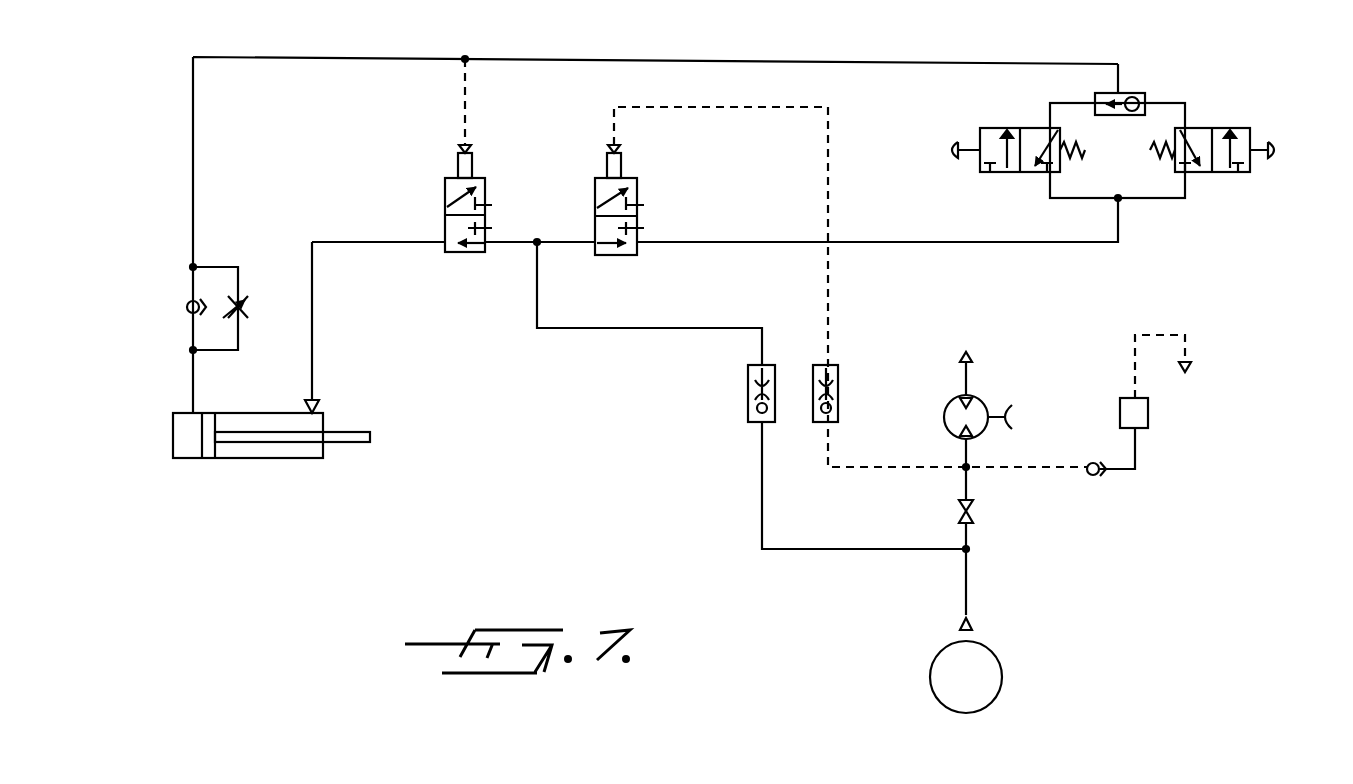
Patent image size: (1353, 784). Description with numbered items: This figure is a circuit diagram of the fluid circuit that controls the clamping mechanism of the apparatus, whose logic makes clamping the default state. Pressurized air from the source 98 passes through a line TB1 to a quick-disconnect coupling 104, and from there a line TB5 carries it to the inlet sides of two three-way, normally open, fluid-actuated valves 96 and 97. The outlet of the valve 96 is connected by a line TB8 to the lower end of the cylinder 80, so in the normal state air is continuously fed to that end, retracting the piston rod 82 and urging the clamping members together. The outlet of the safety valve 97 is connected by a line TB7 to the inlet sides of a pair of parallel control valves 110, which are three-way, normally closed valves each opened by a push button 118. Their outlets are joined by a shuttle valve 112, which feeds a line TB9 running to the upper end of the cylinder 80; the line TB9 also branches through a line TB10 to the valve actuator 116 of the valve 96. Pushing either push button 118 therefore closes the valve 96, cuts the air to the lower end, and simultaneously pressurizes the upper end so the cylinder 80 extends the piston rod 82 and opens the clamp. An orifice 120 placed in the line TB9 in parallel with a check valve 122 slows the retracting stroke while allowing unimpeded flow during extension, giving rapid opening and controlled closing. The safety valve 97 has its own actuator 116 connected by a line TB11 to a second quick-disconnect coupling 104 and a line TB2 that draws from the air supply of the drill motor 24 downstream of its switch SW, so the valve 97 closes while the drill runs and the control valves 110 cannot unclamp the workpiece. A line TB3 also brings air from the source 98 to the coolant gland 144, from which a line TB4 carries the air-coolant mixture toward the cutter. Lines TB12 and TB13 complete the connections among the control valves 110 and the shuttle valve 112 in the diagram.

The drill motor 24 is at (945, 425).
The cylinder 80 is at (260, 458).
The piston rod 82 is at (355, 432).
The normally open valve 96 is at (445, 226).
The safety valve 97 is at (640, 197).
The source of pressurized air 98 is at (985, 668).
The quick-disconnect coupling 104 is at (748, 395).
The control valve 110 is at (990, 128).
The shuttle valve 112 is at (1130, 93).
The valve actuator 116 is at (455, 165).
The push button 118 is at (955, 150).
The orifice 120 is at (245, 300).
The check valve 122 is at (185, 307).
The coolant gland 144 is at (1150, 415).
The line TB1 is at (880, 550).
The line TB2 is at (920, 470).
The line TB3 is at (1035, 470).
The line TB4 is at (1133, 360).
The line TB5 is at (668, 330).
The line TB7 is at (960, 243).
The line TB8 is at (312, 338).
The line TB9 is at (636, 58).
The line TB10 is at (466, 103).
The line TB11 is at (757, 106).
The tubing line TB12 is at (1140, 200).
The tubing line TB13 is at (1062, 100).